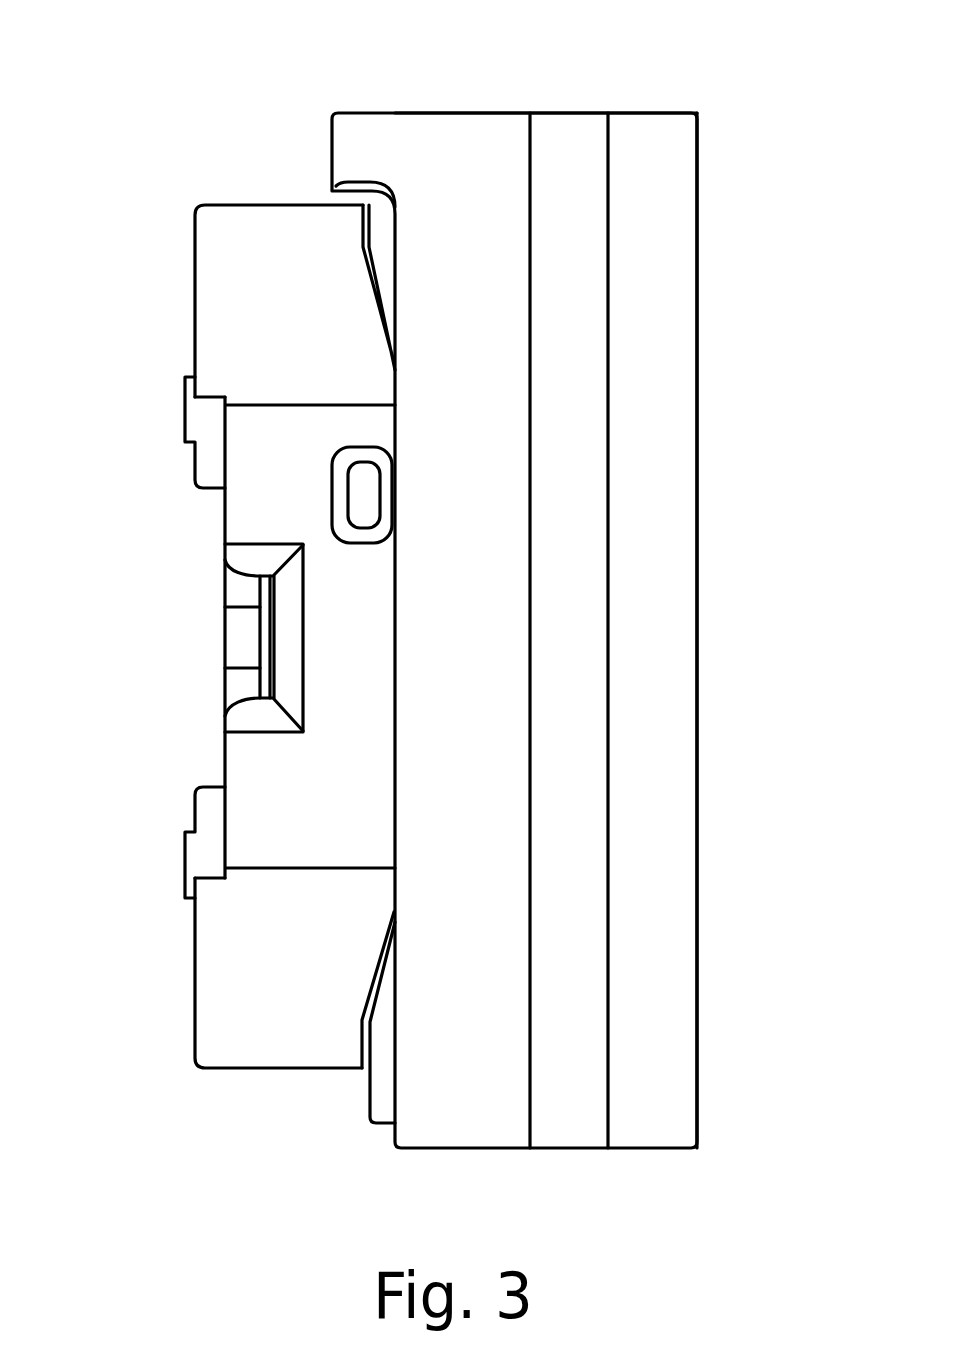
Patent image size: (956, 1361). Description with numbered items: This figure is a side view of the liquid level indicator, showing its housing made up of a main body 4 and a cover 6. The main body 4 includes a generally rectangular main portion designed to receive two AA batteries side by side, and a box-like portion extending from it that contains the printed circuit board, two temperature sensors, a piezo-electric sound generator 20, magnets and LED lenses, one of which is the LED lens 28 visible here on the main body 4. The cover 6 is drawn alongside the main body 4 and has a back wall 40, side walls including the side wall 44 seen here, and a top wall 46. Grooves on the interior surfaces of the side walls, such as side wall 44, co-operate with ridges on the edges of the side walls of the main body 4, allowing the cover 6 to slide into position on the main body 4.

The main body 4 is at (376, 240).
The cover 6 is at (676, 395).
The piezo-electric sound generator 20 is at (264, 645).
The LED lens 28 is at (353, 500).
The back wall 40 is at (700, 803).
The side wall 44 is at (568, 638).
The top wall 46 is at (572, 111).